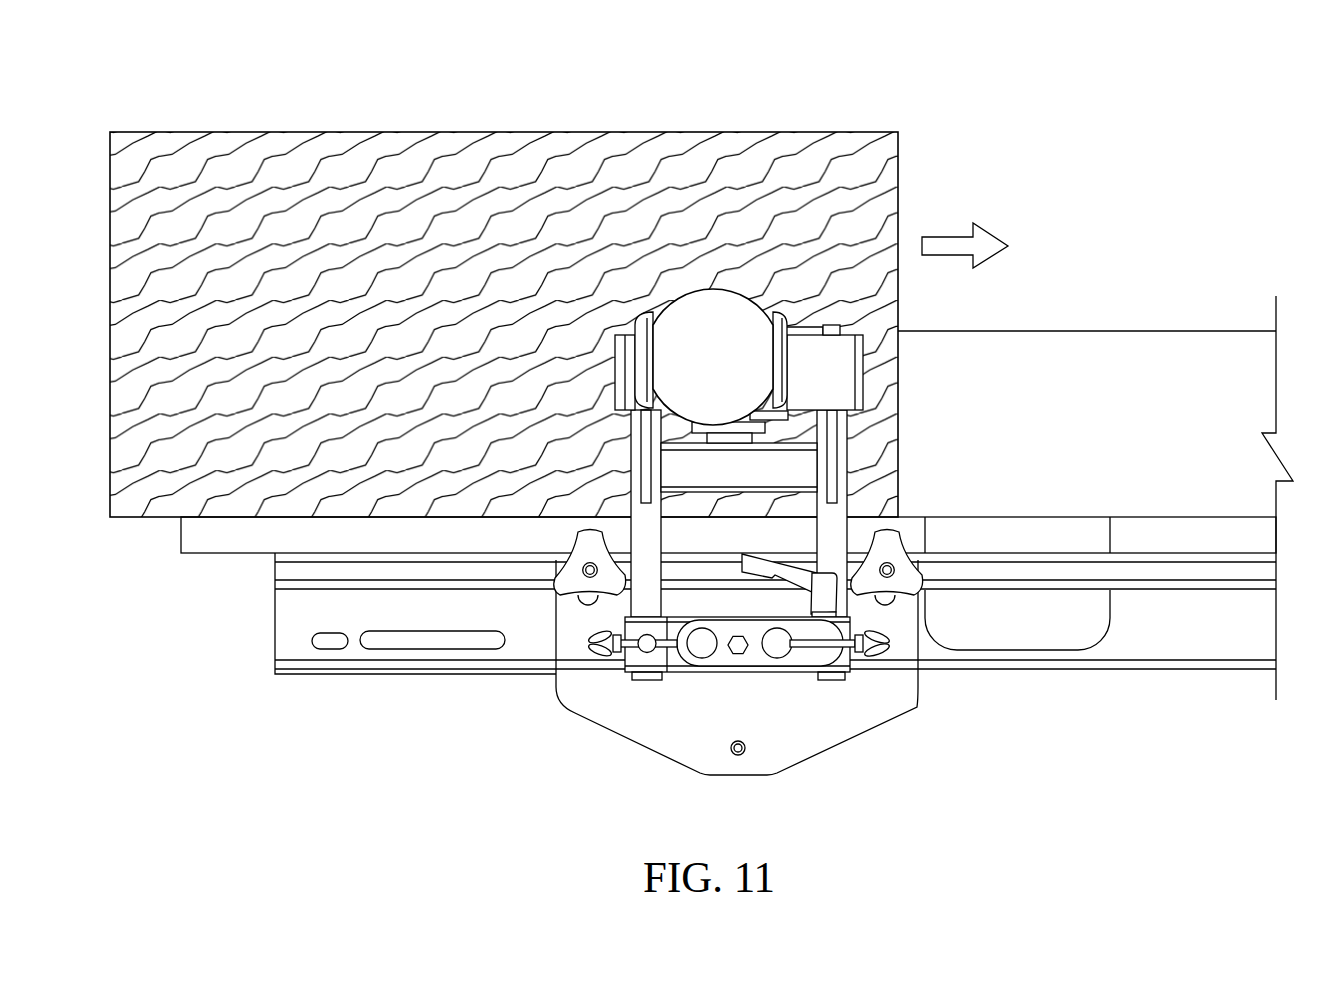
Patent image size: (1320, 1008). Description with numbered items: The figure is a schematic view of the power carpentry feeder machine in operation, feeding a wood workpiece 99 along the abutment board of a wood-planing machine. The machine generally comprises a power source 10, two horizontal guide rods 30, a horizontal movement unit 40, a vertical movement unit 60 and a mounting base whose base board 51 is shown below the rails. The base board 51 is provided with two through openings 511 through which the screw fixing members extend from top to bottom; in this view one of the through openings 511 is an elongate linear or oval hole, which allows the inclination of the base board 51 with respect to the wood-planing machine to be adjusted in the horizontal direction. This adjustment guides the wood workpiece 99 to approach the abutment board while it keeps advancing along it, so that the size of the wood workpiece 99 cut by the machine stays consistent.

The wood workpiece 99 is at (357, 162).
The power source 10 is at (708, 320).
The horizontal guide rods 30 is at (835, 513).
The through openings 511 is at (580, 597).
The horizontal movement unit 40 is at (622, 672).
The vertical movement unit 60 is at (795, 660).
The base board 51 is at (867, 715).